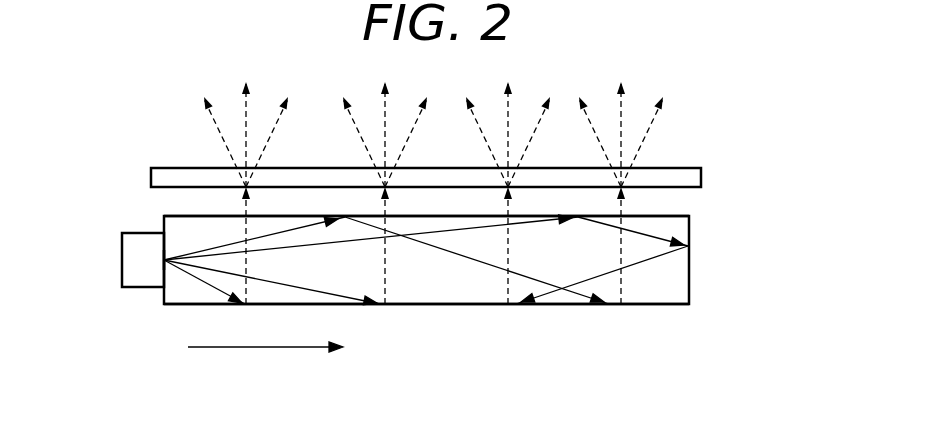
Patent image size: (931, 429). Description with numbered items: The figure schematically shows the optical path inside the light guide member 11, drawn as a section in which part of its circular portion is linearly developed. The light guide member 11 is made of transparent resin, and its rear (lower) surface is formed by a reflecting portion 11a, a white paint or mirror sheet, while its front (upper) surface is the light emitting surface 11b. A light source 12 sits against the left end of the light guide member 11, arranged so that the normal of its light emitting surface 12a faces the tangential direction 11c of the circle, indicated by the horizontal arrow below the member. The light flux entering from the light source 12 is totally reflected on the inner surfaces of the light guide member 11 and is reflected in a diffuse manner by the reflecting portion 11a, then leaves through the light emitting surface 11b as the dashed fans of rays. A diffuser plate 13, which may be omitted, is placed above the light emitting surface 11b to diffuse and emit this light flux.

The light guide member 11 is at (700, 249).
The reflecting portion 11a is at (652, 305).
The light emitting surface 11b is at (651, 211).
The tangential direction 11c is at (260, 349).
The light source 12 is at (133, 248).
The light emitting surface of light source 12a is at (164, 260).
The diffuser plate 13 is at (681, 162).